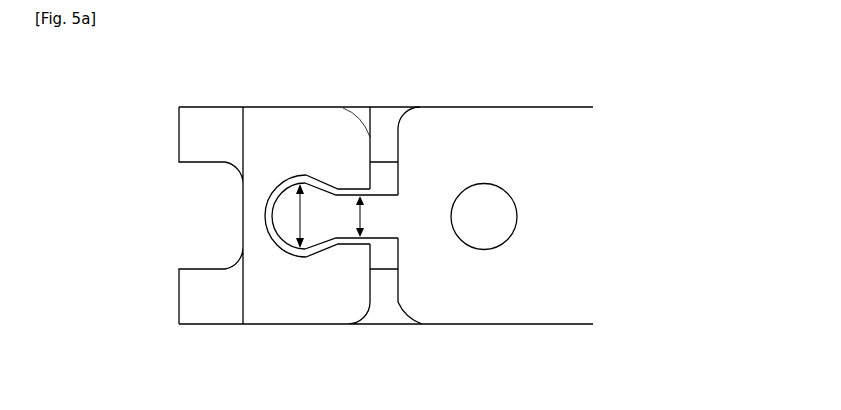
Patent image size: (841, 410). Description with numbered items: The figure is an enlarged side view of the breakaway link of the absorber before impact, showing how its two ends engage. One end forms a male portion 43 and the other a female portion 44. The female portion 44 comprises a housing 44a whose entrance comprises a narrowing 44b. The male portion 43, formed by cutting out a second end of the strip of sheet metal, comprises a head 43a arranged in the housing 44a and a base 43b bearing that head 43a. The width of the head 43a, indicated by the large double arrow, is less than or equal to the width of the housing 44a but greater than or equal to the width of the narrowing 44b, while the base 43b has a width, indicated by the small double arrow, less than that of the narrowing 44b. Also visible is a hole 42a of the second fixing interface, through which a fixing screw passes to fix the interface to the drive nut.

The hole 42a is at (505, 213).
The male portion 43 is at (388, 239).
The head 43a is at (287, 223).
The base 43b is at (541, 255).
The female portion 44 is at (334, 225).
The housing 44a is at (260, 198).
The narrowing 44b is at (357, 184).